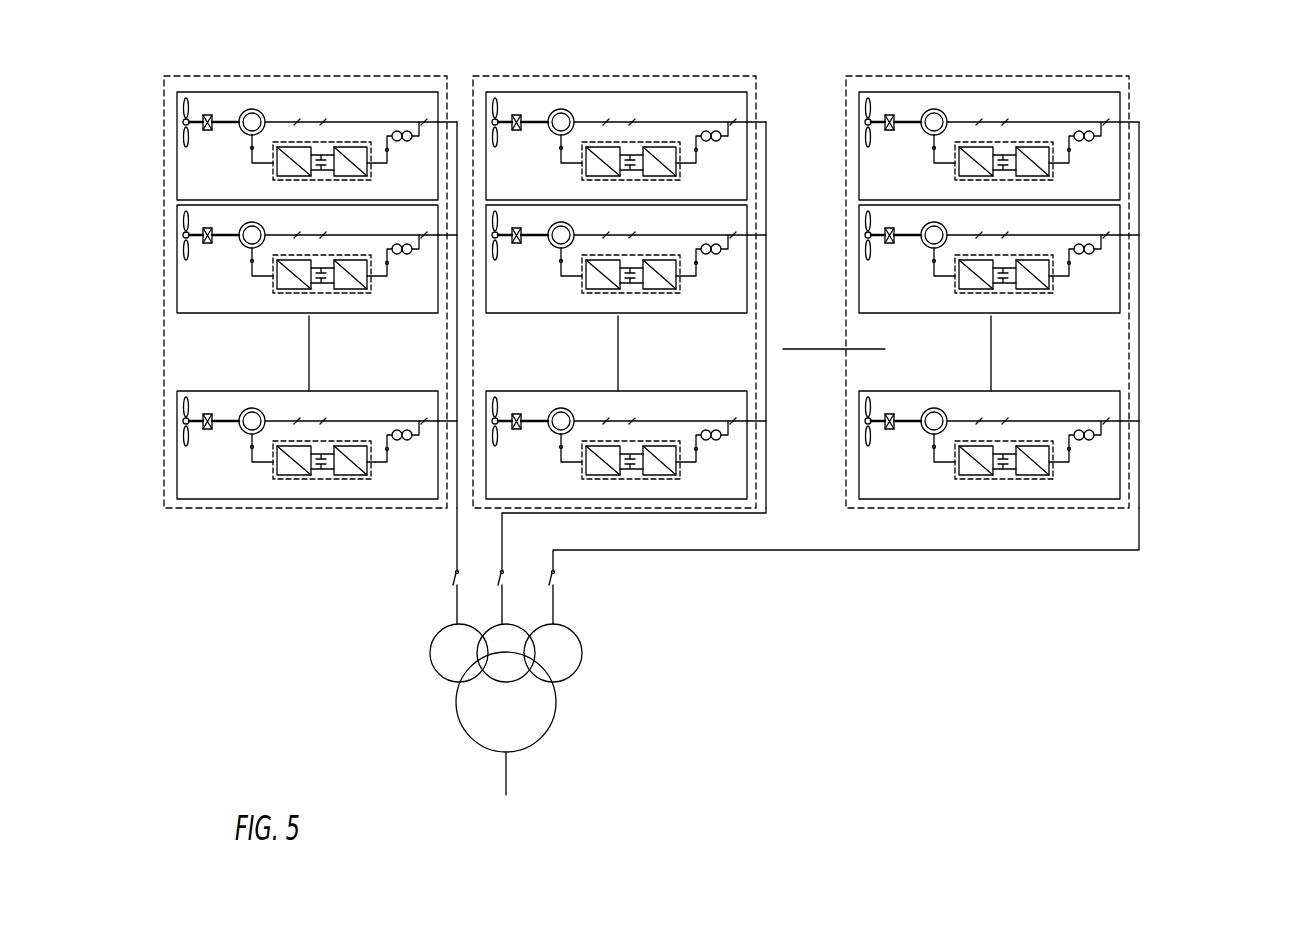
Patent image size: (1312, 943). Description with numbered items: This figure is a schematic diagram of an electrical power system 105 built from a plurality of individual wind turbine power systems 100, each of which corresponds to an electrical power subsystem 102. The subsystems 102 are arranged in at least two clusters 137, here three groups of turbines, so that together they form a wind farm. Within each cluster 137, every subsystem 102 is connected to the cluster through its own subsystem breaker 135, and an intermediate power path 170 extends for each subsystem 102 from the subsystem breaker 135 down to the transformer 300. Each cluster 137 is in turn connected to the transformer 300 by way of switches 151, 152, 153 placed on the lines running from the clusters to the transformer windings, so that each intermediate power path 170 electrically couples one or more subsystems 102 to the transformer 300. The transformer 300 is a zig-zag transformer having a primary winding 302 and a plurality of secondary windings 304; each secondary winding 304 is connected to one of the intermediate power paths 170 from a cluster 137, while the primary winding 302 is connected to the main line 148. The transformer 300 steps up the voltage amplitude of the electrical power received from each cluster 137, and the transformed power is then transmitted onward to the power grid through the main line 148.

The wind turbine power system 100 is at (200, 104).
The electrical power subsystem 102 is at (177, 160).
The electrical power system 105 is at (1221, 156).
The subsystem breaker 135 is at (435, 109).
The cluster 137 is at (162, 218).
The main line 148 is at (507, 778).
The switch 151 is at (445, 573).
The second cluster power path 152 is at (497, 572).
The third cluster power path 153 is at (545, 586).
The intermediate power path 170 is at (457, 350).
The transformer 300 is at (568, 682).
The primary winding 302 is at (543, 735).
The secondary winding 304 is at (440, 673).